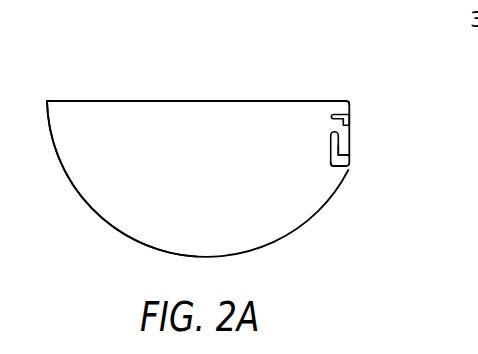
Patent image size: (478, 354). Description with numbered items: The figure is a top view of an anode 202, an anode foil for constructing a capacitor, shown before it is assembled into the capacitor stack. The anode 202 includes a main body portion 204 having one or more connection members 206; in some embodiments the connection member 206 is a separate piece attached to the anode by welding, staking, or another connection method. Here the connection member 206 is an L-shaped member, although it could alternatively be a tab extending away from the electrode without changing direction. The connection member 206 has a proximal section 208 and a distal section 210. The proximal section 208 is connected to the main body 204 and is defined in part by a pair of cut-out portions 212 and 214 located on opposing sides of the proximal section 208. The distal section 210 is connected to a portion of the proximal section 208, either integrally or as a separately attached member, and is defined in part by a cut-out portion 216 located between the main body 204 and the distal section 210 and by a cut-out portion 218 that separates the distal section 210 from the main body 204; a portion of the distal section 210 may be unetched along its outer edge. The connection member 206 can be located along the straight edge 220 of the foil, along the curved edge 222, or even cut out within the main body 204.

The anode 202 is at (120, 53).
The main body portion 204 is at (226, 232).
The connection member 206 is at (351, 131).
The proximal section 208 is at (332, 118).
The distal section 210 is at (350, 137).
The cut-out portion 212 is at (352, 112).
The cut-out portion 214 is at (327, 153).
The cut-out portion 216 is at (342, 155).
The cut-out portion 218 is at (343, 157).
The edge 220 is at (228, 100).
The curved edge 222 is at (90, 211).